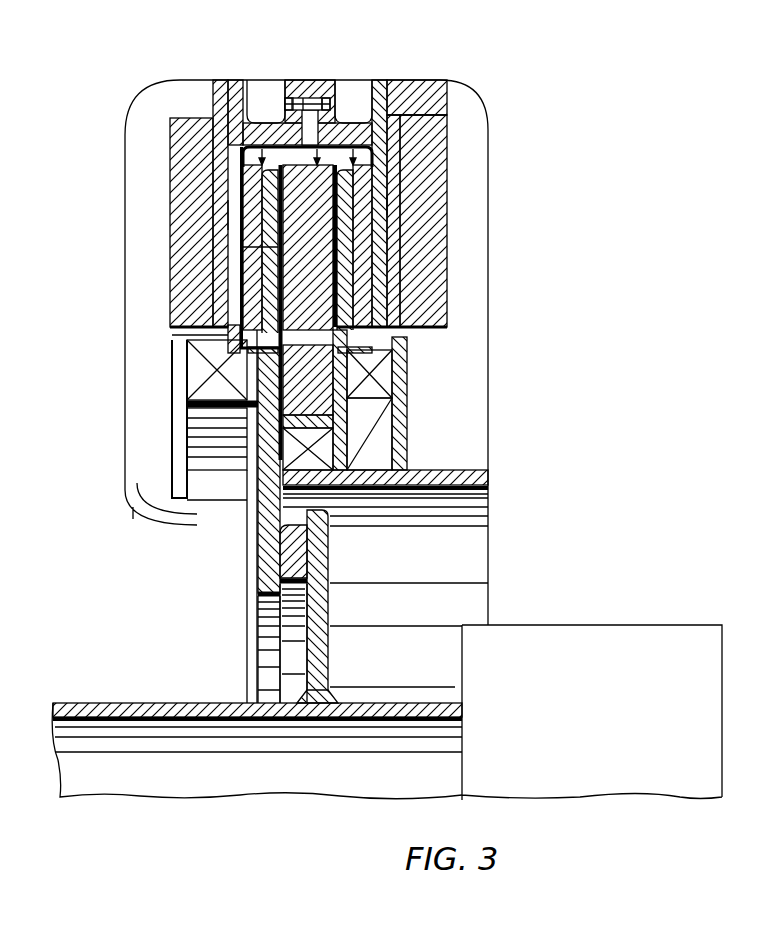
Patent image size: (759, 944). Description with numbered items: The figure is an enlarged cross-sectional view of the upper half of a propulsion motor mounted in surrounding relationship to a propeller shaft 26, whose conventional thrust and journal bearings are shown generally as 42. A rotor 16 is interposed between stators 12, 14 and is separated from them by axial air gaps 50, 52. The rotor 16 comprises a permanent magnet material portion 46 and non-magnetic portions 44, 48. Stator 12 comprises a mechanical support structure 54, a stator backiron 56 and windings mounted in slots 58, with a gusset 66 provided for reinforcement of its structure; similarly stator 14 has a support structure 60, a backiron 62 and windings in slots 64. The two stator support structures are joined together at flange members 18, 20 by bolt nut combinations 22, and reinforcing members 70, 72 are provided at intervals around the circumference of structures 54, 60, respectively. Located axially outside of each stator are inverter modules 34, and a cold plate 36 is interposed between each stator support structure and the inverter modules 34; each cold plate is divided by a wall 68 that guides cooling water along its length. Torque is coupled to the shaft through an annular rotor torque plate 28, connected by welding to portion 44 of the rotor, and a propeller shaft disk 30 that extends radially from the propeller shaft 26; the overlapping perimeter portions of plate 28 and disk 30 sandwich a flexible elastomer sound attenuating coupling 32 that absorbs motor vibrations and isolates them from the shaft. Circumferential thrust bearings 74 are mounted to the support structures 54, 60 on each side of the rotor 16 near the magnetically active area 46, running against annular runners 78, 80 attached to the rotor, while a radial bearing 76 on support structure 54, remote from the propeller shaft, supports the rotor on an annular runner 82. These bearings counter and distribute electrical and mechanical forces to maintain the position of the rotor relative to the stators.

The stator 12 is at (380, 97).
The stator 14 is at (258, 140).
The rotor 16 is at (330, 128).
The flange member 18 is at (314, 98).
The flange member 20 is at (306, 98).
The bolt nut combination 22 is at (282, 105).
The propeller shaft 26 is at (116, 702).
The annular rotor torque plate 28 is at (253, 540).
The propeller shaft disk 30 is at (352, 656).
The sound attenuating coupling 32 is at (297, 558).
The inverter module 34 is at (180, 290).
The cold plate 36 is at (223, 308).
The thrust and journal bearings 42 is at (583, 640).
The non-magnetic portion 44 is at (318, 387).
The permanent magnet material portion 46 is at (318, 273).
The non-magnetic portion 48 is at (266, 178).
The axial air gap 50 is at (383, 178).
The axial air gap 52 is at (248, 200).
The mechanical support structure 54 is at (443, 141).
The stator backiron 56 is at (357, 313).
The slots 58 is at (342, 243).
The support structure 60 is at (200, 132).
The backiron 62 is at (187, 353).
The slots 64 is at (268, 248).
The gusset 66 is at (380, 441).
The wall 68 is at (226, 220).
The reinforcing member 70 is at (464, 110).
The reinforcing member 72 is at (163, 111).
The circumferential thrust bearing 74 is at (172, 398).
The radial bearing 76 is at (303, 461).
The annular runner 78 is at (372, 405).
The annular runner 80 is at (257, 407).
The annular runner 82 is at (277, 432).